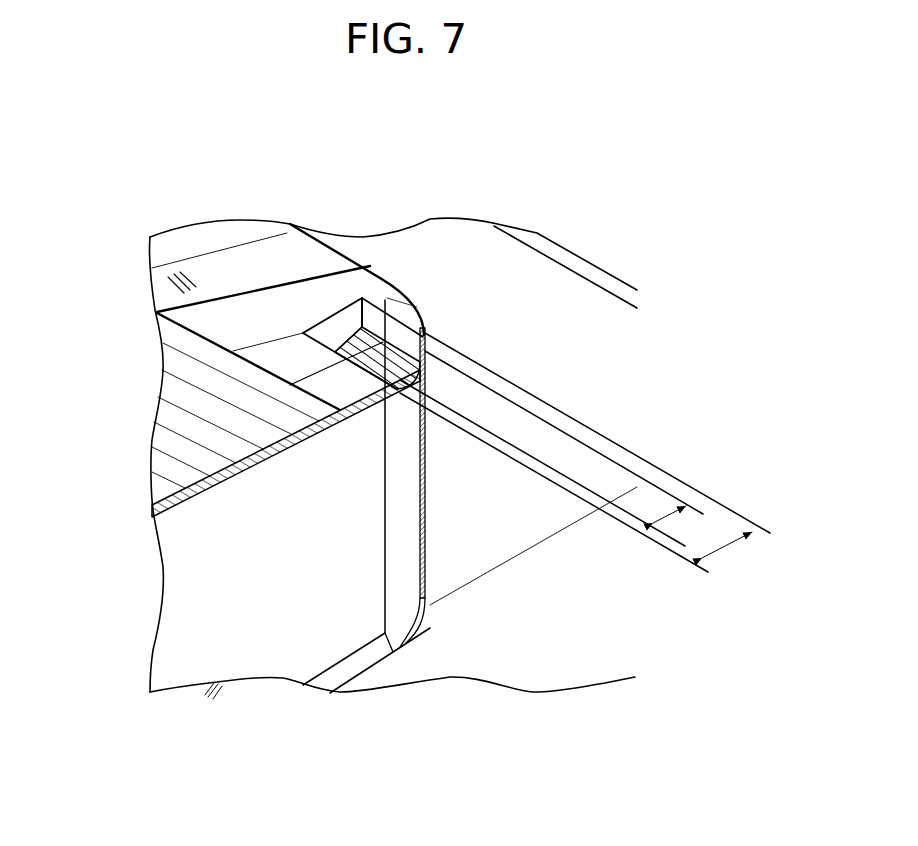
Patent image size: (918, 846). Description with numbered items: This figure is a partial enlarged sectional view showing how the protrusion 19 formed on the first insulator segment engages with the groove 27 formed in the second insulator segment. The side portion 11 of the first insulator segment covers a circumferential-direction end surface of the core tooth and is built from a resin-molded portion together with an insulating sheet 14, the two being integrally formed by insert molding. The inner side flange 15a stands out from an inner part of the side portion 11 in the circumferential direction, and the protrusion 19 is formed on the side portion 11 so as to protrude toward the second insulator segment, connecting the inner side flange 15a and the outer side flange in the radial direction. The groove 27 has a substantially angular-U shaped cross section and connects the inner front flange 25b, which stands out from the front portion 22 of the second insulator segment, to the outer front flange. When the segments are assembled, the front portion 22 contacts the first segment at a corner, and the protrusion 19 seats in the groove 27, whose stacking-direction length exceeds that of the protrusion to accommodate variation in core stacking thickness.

The side portion 11 is at (221, 684).
The insulating sheet 14 is at (277, 647).
The inner side flange 15a is at (523, 648).
The protrusion 19 is at (385, 328).
The front portion 22 is at (167, 278).
The inner front flange 25b is at (447, 248).
The groove 27 is at (323, 346).